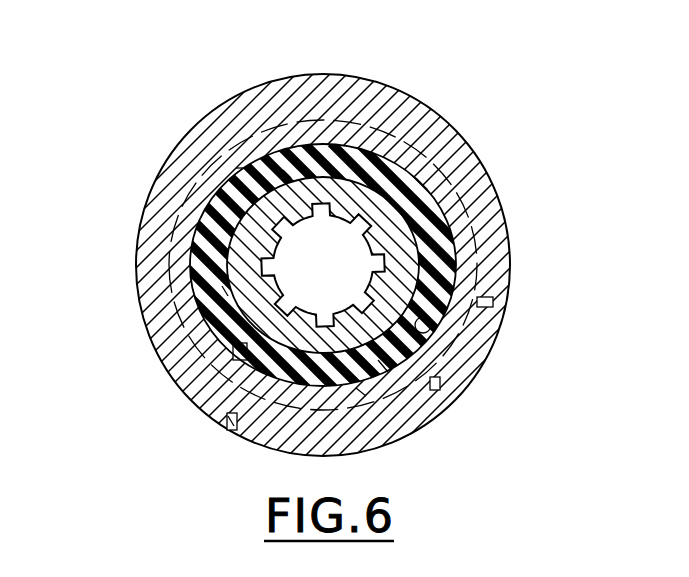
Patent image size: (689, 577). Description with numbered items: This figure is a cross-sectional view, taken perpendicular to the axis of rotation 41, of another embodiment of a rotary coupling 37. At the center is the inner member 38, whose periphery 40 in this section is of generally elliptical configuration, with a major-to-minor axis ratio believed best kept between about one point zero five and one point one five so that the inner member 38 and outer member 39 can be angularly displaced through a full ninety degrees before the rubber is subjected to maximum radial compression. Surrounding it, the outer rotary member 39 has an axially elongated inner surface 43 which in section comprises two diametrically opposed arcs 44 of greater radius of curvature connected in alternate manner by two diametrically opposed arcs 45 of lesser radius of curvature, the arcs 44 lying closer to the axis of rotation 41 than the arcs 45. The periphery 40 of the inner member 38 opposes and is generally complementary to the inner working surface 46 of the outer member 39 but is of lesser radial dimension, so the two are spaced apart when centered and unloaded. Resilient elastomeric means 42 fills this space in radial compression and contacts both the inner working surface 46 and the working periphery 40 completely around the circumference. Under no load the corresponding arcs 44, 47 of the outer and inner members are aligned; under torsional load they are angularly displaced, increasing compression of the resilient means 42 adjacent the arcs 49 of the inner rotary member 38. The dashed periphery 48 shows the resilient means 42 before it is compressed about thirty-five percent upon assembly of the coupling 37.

The rotary coupling 37 is at (148, 139).
The inner member 38 is at (228, 421).
The outer member 39 is at (213, 378).
The periphery 40 is at (240, 350).
The axis of rotation 41 is at (330, 268).
The resilient means 42 is at (240, 170).
The inner surface 43 is at (497, 303).
The arcs of greater radius of curvature 44 is at (338, 127).
The arcs of lesser radius of curvature 45 is at (213, 238).
The inner working surface 46 is at (430, 337).
The arcs of lesser radius of curvature of inner member 47 is at (287, 173).
The periphery of resilient means 48 is at (362, 392).
The arcs of lesser radius curvature of inner rotary member 49 is at (225, 291).